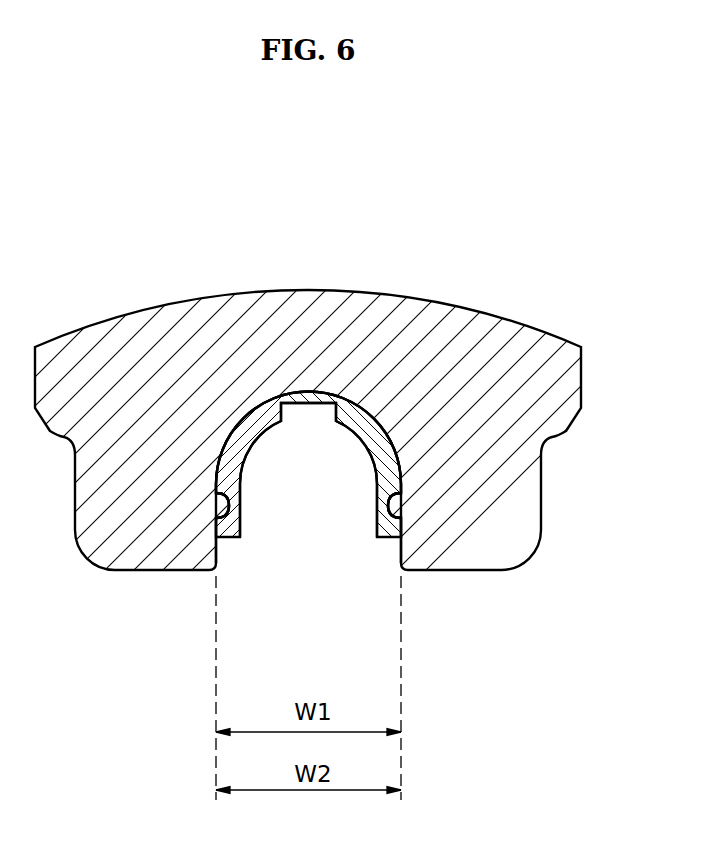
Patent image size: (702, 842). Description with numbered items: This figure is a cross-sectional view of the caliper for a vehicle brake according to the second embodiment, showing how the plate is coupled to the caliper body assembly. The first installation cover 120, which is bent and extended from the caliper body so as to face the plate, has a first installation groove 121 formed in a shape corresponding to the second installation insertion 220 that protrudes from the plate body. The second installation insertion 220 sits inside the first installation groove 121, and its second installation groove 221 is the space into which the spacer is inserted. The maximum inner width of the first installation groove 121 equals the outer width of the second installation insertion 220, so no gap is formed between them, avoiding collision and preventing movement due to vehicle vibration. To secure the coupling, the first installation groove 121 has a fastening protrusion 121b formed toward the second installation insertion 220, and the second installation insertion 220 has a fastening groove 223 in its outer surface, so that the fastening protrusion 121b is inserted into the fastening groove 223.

The first installation cover 120 is at (510, 352).
The first installation groove 121 is at (365, 403).
The fastening protrusion 121b is at (393, 513).
The second installation insertion 220 is at (252, 428).
The second installation groove 221 is at (272, 433).
The fastening groove 223 is at (233, 513).